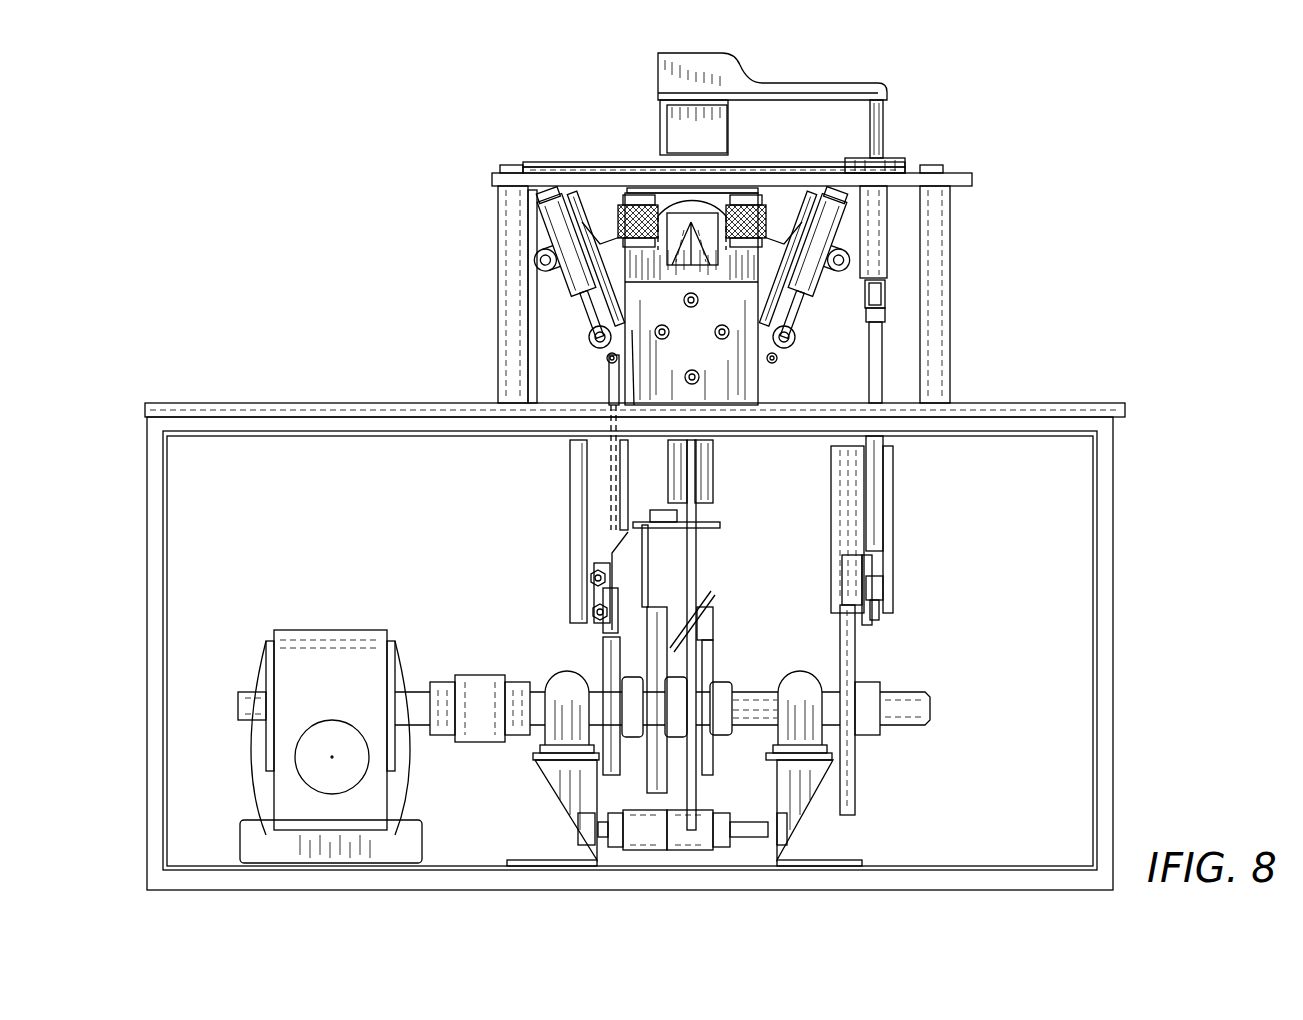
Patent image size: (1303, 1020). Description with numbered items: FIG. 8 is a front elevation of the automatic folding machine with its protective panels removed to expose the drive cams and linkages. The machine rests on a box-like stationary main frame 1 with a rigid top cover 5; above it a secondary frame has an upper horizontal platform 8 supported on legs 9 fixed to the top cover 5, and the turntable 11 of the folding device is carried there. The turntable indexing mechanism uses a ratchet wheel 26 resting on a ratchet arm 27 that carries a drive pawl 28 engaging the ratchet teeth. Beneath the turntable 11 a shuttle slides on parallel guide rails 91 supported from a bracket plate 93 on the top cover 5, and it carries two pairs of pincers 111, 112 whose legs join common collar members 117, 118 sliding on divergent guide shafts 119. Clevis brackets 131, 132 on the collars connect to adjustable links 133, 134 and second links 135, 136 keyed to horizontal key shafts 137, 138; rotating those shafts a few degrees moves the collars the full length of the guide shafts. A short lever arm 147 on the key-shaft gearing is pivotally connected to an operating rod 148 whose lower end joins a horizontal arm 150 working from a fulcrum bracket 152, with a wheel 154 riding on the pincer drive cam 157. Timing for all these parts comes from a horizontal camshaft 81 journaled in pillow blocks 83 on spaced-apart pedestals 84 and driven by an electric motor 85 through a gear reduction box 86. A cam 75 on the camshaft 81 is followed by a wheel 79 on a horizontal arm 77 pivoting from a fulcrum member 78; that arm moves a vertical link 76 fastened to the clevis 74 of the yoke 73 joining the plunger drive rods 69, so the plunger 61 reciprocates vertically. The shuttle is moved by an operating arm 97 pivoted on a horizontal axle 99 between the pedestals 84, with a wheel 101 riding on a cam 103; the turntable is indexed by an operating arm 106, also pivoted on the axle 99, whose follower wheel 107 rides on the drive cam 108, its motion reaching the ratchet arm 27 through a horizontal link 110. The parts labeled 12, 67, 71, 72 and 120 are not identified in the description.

The main frame 1 is at (147, 592).
The top cover 5 is at (360, 403).
The upper platform 8 is at (950, 178).
The legs 9 is at (500, 283).
The turntable 11 is at (555, 162).
The mounting plate 12 is at (597, 170).
The ratchet wheel 26 is at (713, 508).
The ratchet arm 27 is at (713, 525).
The drive pawl 28 is at (660, 514).
The plunger 61 is at (680, 130).
The arm 67 is at (809, 90).
The plunger drive rods 69 is at (883, 117).
The column 71 is at (888, 270).
The block 72 is at (900, 158).
The yoke 73 is at (886, 287).
The clevis 74 is at (886, 313).
The cam 75 is at (856, 669).
The vertical link 76 is at (869, 360).
The horizontal arm 77 is at (866, 615).
The fulcrum member 78 is at (893, 517).
The rotatable wheel 79 is at (845, 572).
The camshaft 81 is at (762, 702).
The pillow blocks 83 is at (563, 683).
The pedestals 84 is at (563, 792).
The electric motor 85 is at (245, 765).
The gear reduction box 86 is at (355, 635).
The guide rails 91 is at (684, 300).
The bracket plate 93 is at (632, 373).
The operating arm 97 is at (697, 580).
The horizontal axle 99 is at (747, 822).
The rotatable wheel 101 is at (708, 665).
The cam 103 is at (717, 612).
The operating arm 106 is at (661, 603).
The follower wheel 107 is at (672, 778).
The drive cam 108 is at (672, 650).
The link 110 is at (623, 527).
The pincers 111 is at (858, 226).
The pincers 112 is at (540, 220).
The collar member 117 is at (850, 210).
The collar member 118 is at (547, 205).
The guide shafts 119 is at (580, 310).
The piston rod 120 is at (798, 282).
The clevis bracket 131 is at (890, 247).
The clevis bracket 132 is at (540, 258).
The adjustable link 133 is at (830, 318).
The adjustable link 134 is at (537, 297).
The second link 135 is at (775, 345).
The second link 136 is at (590, 340).
The key shaft 137 is at (740, 300).
The key shaft 138 is at (676, 342).
The lever arm 147 is at (607, 358).
The operating rod 148 is at (607, 397).
The horizontal arm 150 is at (604, 628).
The fulcrum bracket 152 is at (582, 610).
The rotatable wheel 154 is at (618, 590).
The pincer drive cam 157 is at (622, 775).